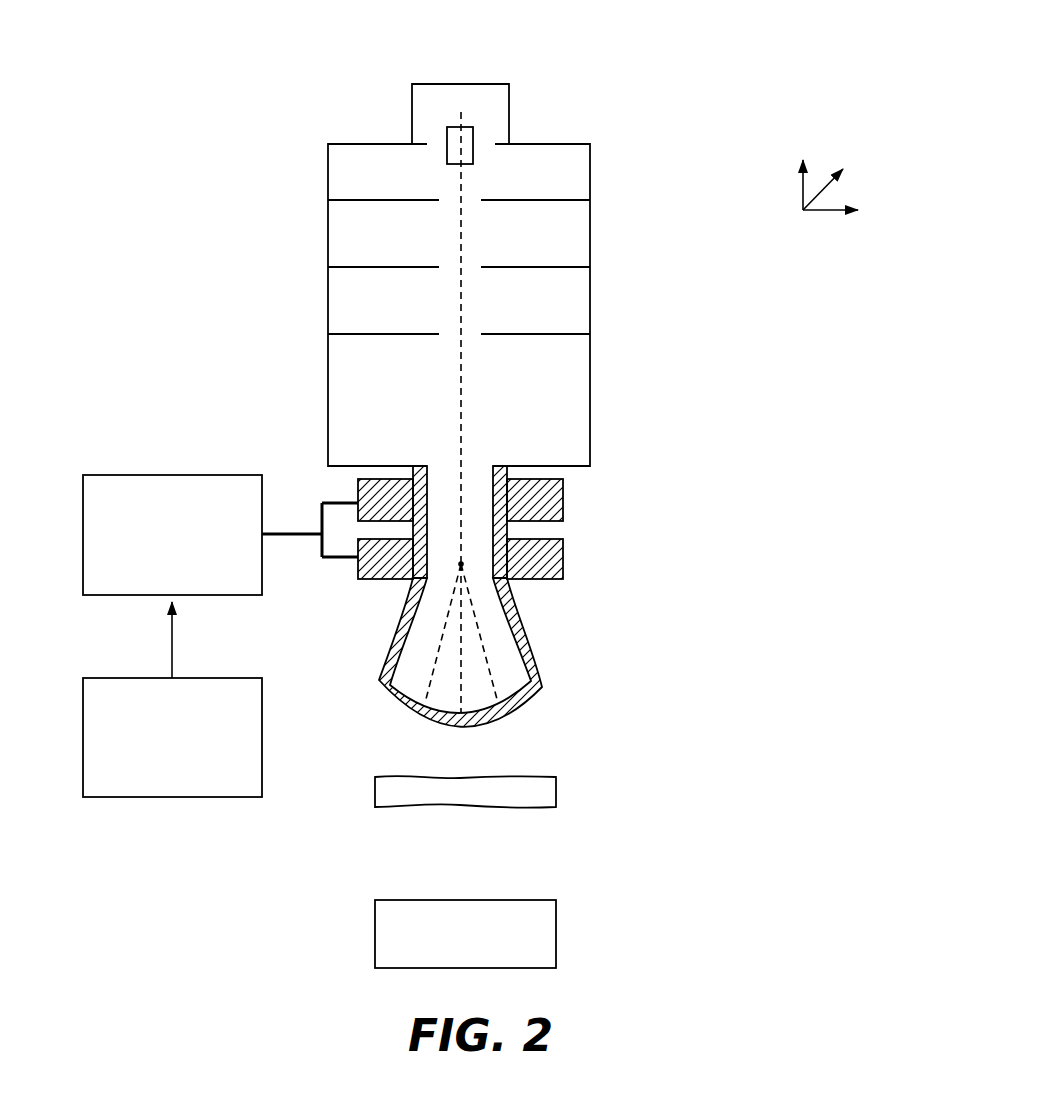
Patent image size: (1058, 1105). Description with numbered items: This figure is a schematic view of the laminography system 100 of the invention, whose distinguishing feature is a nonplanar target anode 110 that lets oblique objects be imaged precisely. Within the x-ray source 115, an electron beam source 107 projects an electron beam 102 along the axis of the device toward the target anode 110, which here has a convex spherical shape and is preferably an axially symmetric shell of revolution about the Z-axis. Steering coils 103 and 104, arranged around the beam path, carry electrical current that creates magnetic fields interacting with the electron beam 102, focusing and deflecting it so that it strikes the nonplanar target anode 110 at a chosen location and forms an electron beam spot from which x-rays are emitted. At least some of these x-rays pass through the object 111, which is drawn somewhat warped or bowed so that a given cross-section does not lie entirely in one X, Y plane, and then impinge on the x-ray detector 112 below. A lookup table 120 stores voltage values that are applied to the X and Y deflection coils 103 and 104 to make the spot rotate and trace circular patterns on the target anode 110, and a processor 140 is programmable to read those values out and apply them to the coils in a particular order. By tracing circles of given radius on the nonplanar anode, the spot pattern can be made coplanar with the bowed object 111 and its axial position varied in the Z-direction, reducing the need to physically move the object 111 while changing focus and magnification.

The laminography system 100 is at (653, 75).
The x-ray source 115 is at (273, 240).
The nonplanar target anode 110 is at (562, 198).
The electron beam source 107 is at (449, 126).
The electron beam 102 is at (463, 305).
The steering coil 103 is at (562, 508).
The steering coil 104 is at (562, 572).
The lookup table (LUT) 120 is at (155, 559).
The processor 140 is at (155, 761).
The object 111 is at (567, 766).
The x-ray detector 112 is at (448, 956).